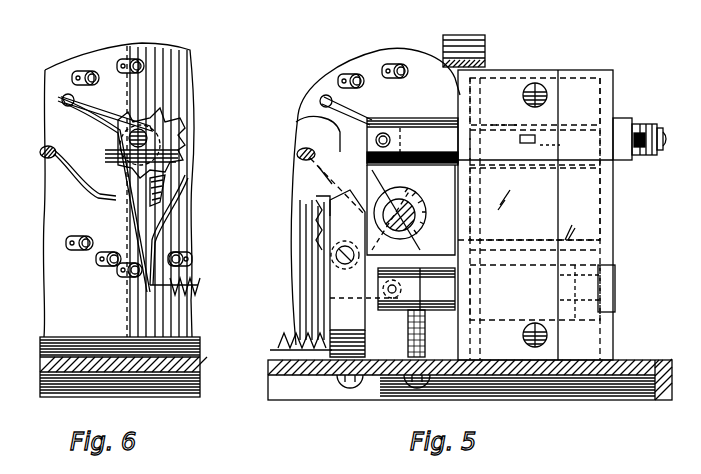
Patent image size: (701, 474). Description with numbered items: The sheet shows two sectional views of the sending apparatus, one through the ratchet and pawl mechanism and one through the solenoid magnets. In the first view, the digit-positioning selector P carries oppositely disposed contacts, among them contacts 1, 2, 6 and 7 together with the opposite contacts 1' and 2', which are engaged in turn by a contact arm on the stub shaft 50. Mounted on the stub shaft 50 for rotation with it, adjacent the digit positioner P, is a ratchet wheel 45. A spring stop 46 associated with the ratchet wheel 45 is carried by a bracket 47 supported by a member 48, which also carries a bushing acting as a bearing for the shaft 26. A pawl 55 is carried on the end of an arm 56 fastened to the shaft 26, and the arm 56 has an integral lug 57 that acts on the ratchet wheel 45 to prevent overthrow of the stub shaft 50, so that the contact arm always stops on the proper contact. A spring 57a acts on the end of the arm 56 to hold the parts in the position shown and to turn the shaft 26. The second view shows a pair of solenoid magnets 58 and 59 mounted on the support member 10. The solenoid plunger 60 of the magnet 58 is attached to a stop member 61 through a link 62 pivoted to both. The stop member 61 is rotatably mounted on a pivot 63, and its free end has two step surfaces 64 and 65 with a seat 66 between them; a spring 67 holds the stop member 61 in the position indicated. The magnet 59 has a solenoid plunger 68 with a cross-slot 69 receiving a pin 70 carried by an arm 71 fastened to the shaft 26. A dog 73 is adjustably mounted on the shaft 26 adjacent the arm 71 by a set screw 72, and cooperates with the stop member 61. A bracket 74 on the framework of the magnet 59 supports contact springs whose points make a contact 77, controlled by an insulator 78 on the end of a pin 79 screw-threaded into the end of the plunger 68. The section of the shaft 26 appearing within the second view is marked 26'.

In FIG. 6, the digit-positioning selector P is at (113, 46).
In FIG. 6, the contact 1 is at (128, 58).
In FIG. 5, the contact 1 is at (399, 64).
In FIG. 6, the contact 2 is at (85, 68).
In FIG. 5, the contact 2 is at (352, 70).
In FIG. 6, the contact 6 is at (66, 246).
In FIG. 6, the contact 7 is at (100, 266).
In FIG. 6, the contact 1' is at (128, 283).
In FIG. 6, the contact 2' is at (195, 250).
In FIG. 6, the support member 10 is at (200, 366).
In FIG. 5, the support member 10 is at (268, 367).
In FIG. 6, the shaft 26 is at (194, 190).
In FIG. 5, the cam 26' is at (442, 216).
In FIG. 6, the ratchet wheel 45 is at (165, 146).
In FIG. 6, the spring stop 46 is at (97, 199).
In FIG. 6, the bracket 47 is at (116, 156).
In FIG. 5, the bracket 47 is at (297, 152).
In FIG. 5, the member 48 is at (300, 122).
In FIG. 6, the stub shaft 50 is at (150, 160).
In FIG. 6, the pawl 55 is at (112, 124).
In FIG. 6, the arm 56 is at (100, 126).
In FIG. 6, the lug 57 is at (178, 224).
In FIG. 6, the spring 57a is at (198, 296).
In FIG. 5, the solenoid magnet 58 is at (602, 250).
In FIG. 5, the solenoid magnet 59 is at (580, 85).
In FIG. 5, the solenoid plunger 60 is at (420, 268).
In FIG. 5, the stop member 61 is at (345, 290).
In FIG. 5, the link 62 is at (366, 306).
In FIG. 5, the pivot 63 is at (330, 262).
In FIG. 5, the step surface 64 is at (355, 224).
In FIG. 5, the step surface 65 is at (322, 206).
In FIG. 5, the seat 66 is at (320, 228).
In FIG. 5, the spring 67 is at (278, 340).
In FIG. 5, the solenoid plunger 68 is at (420, 125).
In FIG. 5, the cross-slot 69 is at (378, 122).
In FIG. 5, the pin 70 is at (375, 140).
In FIG. 5, the arm 71 is at (420, 196).
In FIG. 5, the set screw 72 is at (335, 178).
In FIG. 5, the dog 73 is at (362, 208).
In FIG. 5, the bracket 74 is at (632, 124).
In FIG. 5, the contact 77 is at (652, 156).
In FIG. 5, the insulator 78 is at (624, 160).
In FIG. 5, the pin 79 is at (586, 168).